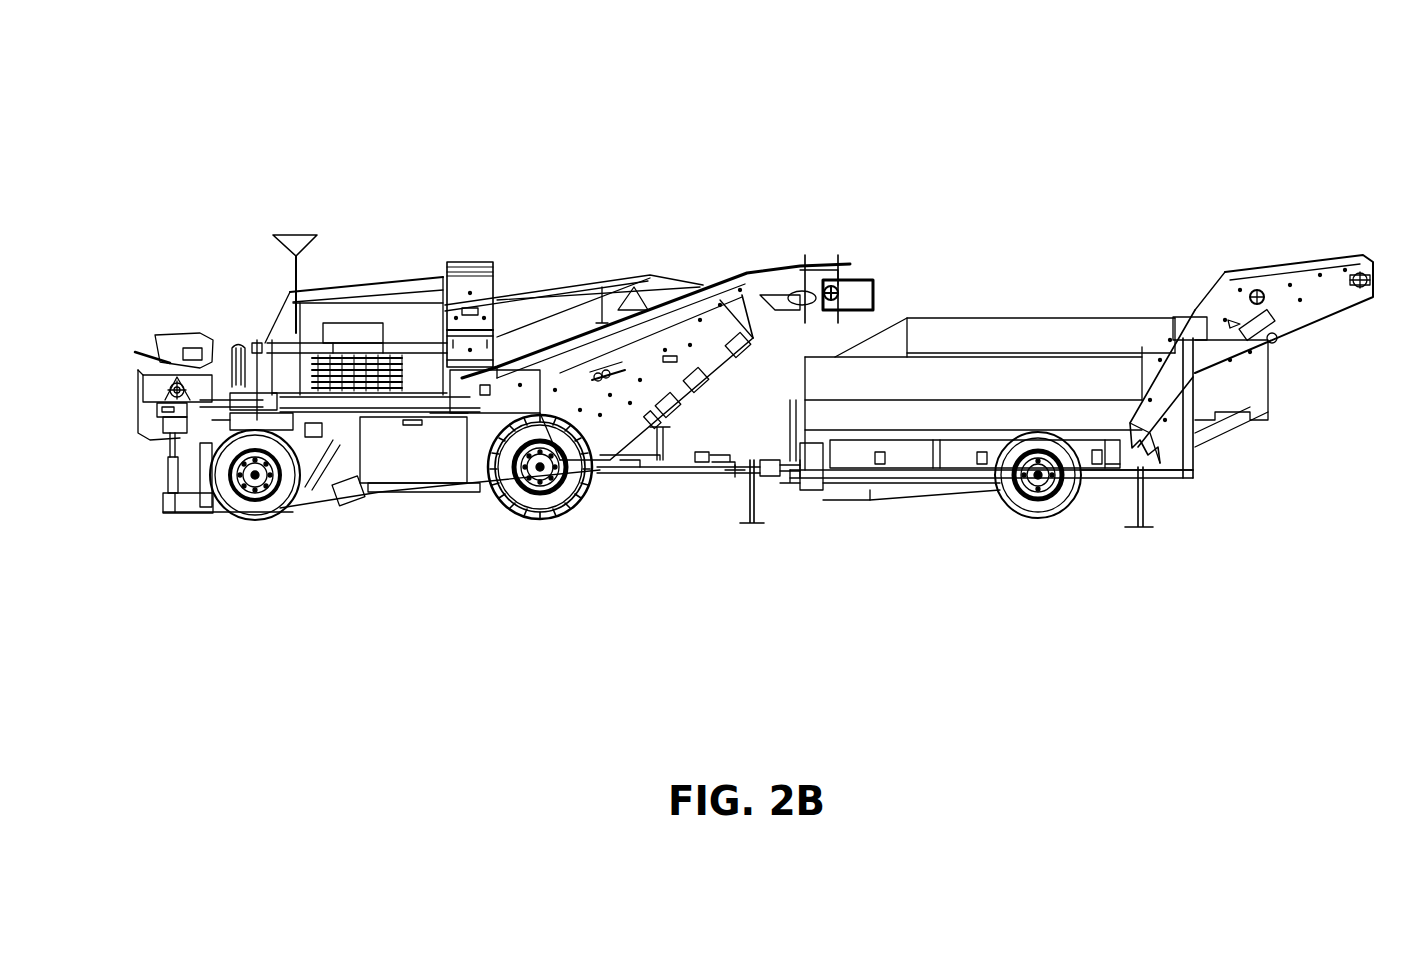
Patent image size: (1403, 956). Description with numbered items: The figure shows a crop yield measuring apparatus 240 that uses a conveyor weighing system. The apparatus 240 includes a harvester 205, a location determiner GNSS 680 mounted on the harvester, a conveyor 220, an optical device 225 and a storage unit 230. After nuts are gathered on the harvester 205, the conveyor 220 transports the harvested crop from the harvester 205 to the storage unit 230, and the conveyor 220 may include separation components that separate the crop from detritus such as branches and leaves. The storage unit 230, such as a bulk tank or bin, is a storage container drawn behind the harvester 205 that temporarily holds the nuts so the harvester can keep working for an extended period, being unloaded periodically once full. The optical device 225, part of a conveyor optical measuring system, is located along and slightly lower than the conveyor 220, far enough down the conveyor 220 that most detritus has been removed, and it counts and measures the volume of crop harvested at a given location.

The crop yield measuring apparatus 240 is at (687, 85).
The location determiner GNSS 680 is at (293, 247).
The harvester 205 is at (490, 262).
The conveyor 220 is at (746, 273).
The optical device 225 is at (862, 282).
The storage unit 230 is at (1063, 316).